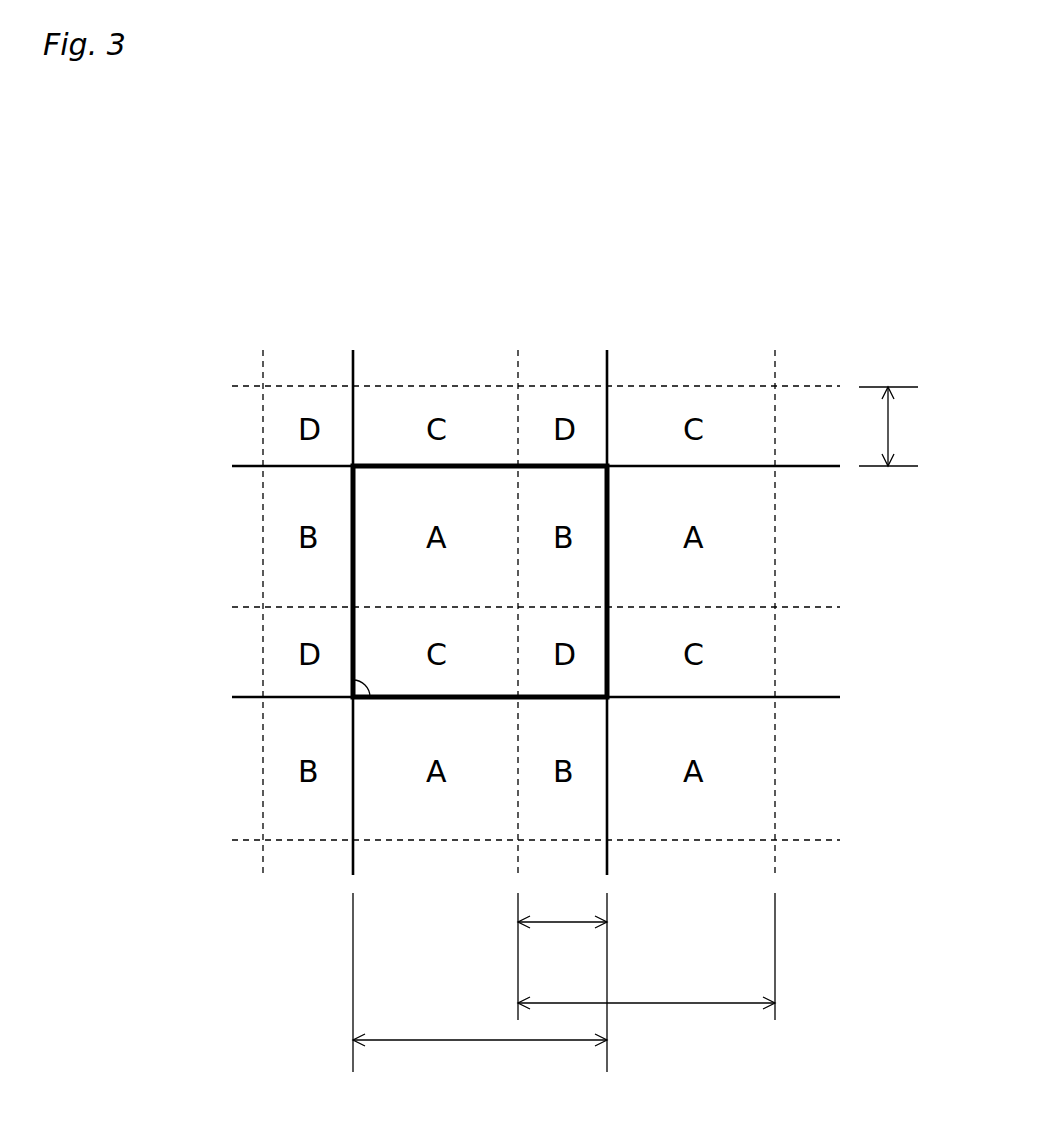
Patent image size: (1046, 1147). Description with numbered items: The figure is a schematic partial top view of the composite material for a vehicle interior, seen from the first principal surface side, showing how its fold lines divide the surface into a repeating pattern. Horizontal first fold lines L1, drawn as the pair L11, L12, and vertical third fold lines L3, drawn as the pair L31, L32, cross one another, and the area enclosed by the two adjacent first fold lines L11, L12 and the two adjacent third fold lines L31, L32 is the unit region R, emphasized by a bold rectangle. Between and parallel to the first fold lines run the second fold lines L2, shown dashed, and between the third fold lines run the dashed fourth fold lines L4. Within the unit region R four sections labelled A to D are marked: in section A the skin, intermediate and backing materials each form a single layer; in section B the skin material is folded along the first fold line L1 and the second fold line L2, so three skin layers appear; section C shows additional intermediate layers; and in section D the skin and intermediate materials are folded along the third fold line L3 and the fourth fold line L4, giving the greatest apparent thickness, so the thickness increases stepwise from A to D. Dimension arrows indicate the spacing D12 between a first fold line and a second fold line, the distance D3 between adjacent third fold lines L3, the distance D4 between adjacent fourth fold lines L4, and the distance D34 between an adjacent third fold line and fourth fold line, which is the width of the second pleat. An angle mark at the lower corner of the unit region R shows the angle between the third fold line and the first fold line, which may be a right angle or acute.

The first fold line L1 is at (445, 578).
The first fold line L11 is at (232, 466).
The first fold line L12 is at (473, 670).
The second fold line L2 is at (511, 614).
The third fold line L3 is at (507, 622).
The third fold line L31 is at (353, 366).
The third fold line L32 is at (634, 649).
The fourth fold line L4 is at (521, 588).
The unit region R is at (395, 508).
The distance between first fold line and second fold line D12 is at (893, 437).
The distance between adjacent third fold lines D3 is at (487, 1042).
The distance between third fold line and fourth fold line D34 is at (572, 925).
The distance between adjacent fourth fold lines D4 is at (642, 1004).